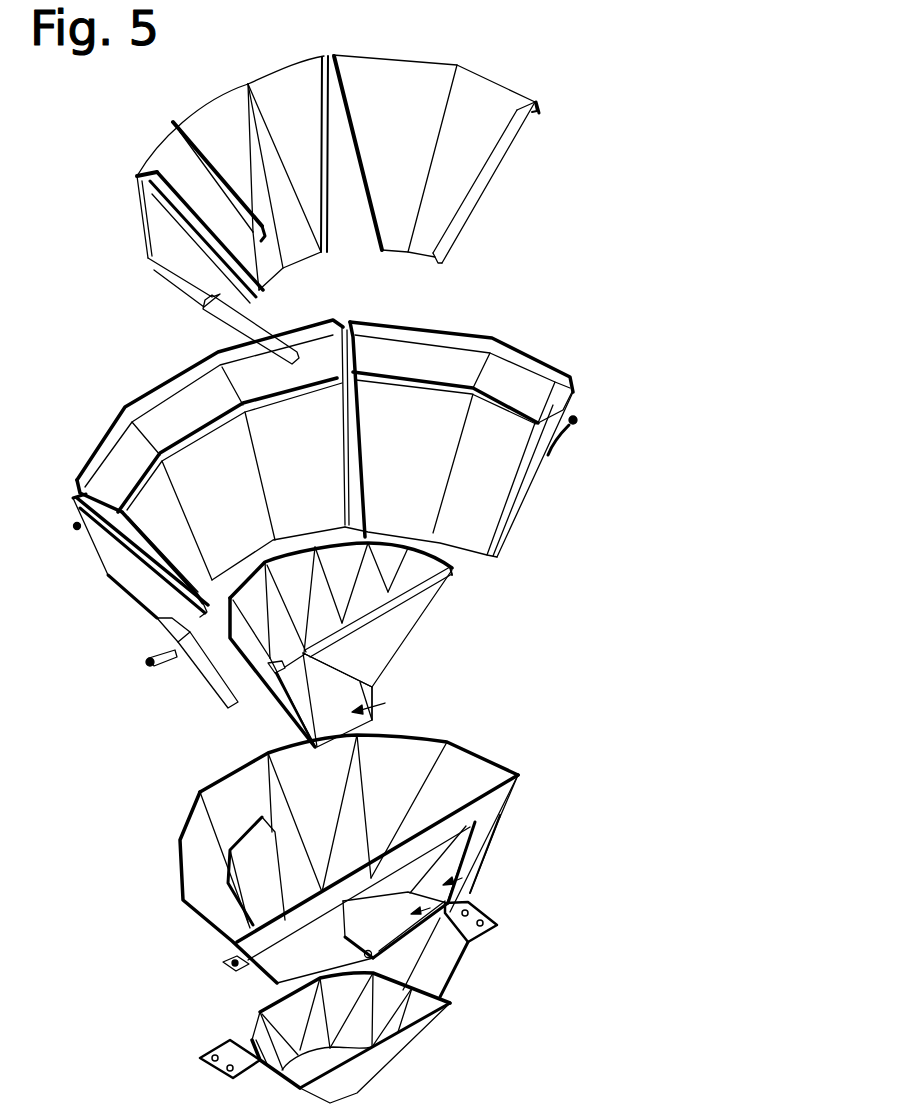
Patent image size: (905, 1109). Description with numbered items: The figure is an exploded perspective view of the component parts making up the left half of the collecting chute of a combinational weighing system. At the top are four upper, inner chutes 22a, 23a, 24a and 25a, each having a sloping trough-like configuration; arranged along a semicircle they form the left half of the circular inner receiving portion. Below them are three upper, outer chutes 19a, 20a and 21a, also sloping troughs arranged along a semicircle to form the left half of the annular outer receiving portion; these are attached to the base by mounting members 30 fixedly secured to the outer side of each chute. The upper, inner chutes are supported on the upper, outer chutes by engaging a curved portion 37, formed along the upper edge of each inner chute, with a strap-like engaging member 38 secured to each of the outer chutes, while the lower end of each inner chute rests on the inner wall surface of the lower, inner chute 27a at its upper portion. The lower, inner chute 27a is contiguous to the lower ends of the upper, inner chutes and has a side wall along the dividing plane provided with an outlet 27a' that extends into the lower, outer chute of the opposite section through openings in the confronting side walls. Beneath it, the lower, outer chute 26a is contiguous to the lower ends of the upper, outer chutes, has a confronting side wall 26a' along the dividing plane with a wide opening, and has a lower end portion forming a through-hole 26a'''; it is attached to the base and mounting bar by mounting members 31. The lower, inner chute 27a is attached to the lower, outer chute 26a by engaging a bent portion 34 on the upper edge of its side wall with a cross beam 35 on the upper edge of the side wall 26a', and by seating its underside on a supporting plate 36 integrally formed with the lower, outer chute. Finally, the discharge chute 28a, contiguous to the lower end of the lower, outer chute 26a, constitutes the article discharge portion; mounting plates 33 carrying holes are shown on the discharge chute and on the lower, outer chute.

The upper, outer chute 19a is at (98, 545).
The upper, outer chute 20a is at (158, 412).
The upper, outer chute 21a is at (421, 350).
The upper, inner chute 22a is at (153, 219).
The upper, inner chute 23a is at (158, 158).
The upper, inner chute 24a is at (277, 86).
The upper, inner chute 25a is at (431, 72).
The lower, outer chute 26a is at (329, 859).
The side wall 26a' is at (538, 839).
The through-hole 26a''' is at (511, 949).
The lower, inner chute 27a is at (410, 645).
The outlet 27a' is at (409, 700).
The discharge chute 28a is at (407, 1043).
The mounting member 30 is at (580, 428).
The mounting member 31 is at (222, 962).
The mounting plate with holes 33 is at (482, 940).
The bent portion 34 is at (432, 595).
The cross beam 35 is at (383, 869).
The supporting plate 36 is at (237, 874).
The curved portion 37 is at (540, 111).
The strap-like engaging member 38 is at (209, 435).